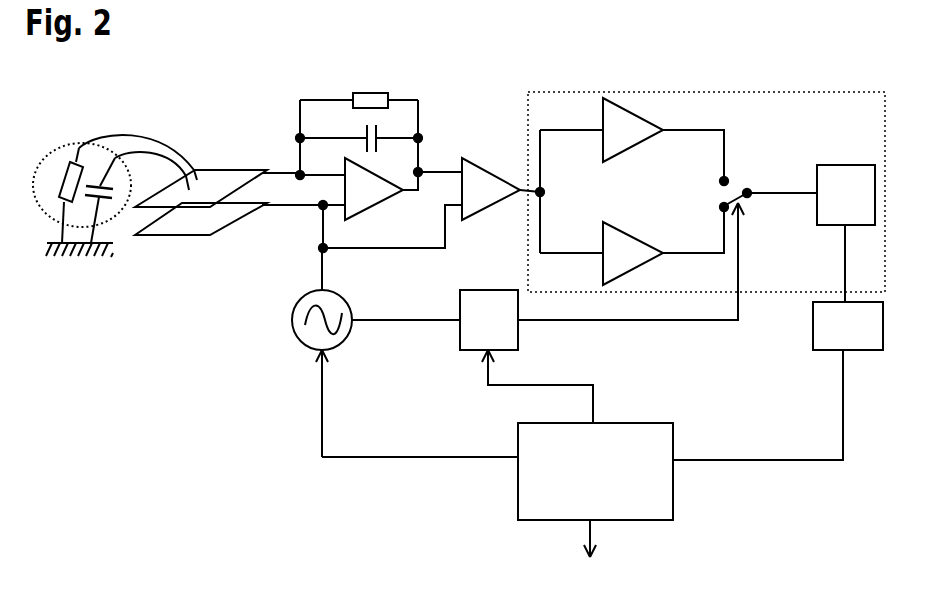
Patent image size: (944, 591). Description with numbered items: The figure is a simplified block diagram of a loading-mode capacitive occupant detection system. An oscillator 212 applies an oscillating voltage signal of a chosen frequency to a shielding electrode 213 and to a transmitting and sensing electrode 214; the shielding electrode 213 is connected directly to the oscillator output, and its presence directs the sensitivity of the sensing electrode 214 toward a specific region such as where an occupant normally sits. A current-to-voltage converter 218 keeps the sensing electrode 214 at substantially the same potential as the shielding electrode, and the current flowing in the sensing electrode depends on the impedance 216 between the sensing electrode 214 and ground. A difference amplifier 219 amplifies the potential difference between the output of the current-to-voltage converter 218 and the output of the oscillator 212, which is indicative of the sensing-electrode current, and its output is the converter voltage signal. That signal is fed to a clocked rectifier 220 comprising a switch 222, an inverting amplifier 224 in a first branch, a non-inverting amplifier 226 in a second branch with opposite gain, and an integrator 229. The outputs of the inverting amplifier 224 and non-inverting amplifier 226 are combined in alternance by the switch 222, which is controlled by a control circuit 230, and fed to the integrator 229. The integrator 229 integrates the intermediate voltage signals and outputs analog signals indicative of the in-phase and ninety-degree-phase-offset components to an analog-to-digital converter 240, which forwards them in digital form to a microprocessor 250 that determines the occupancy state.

The oscillator 212 is at (297, 338).
The shielding electrode 213 is at (227, 227).
The transmitting and sensing electrode 214 is at (223, 168).
The impedance 216 is at (88, 145).
The current-to-voltage converter 218 is at (433, 122).
The difference amplifier 219 is at (487, 210).
The clocked rectifier 220 is at (760, 293).
The switch 222 is at (743, 167).
The inverting amplifier 224 is at (647, 140).
The non-inverting amplifier 226 is at (647, 237).
The integrator 229 is at (845, 165).
The control circuit 230 is at (460, 337).
The analog-to-digital converter 240 is at (813, 333).
The microprocessor 250 is at (633, 423).